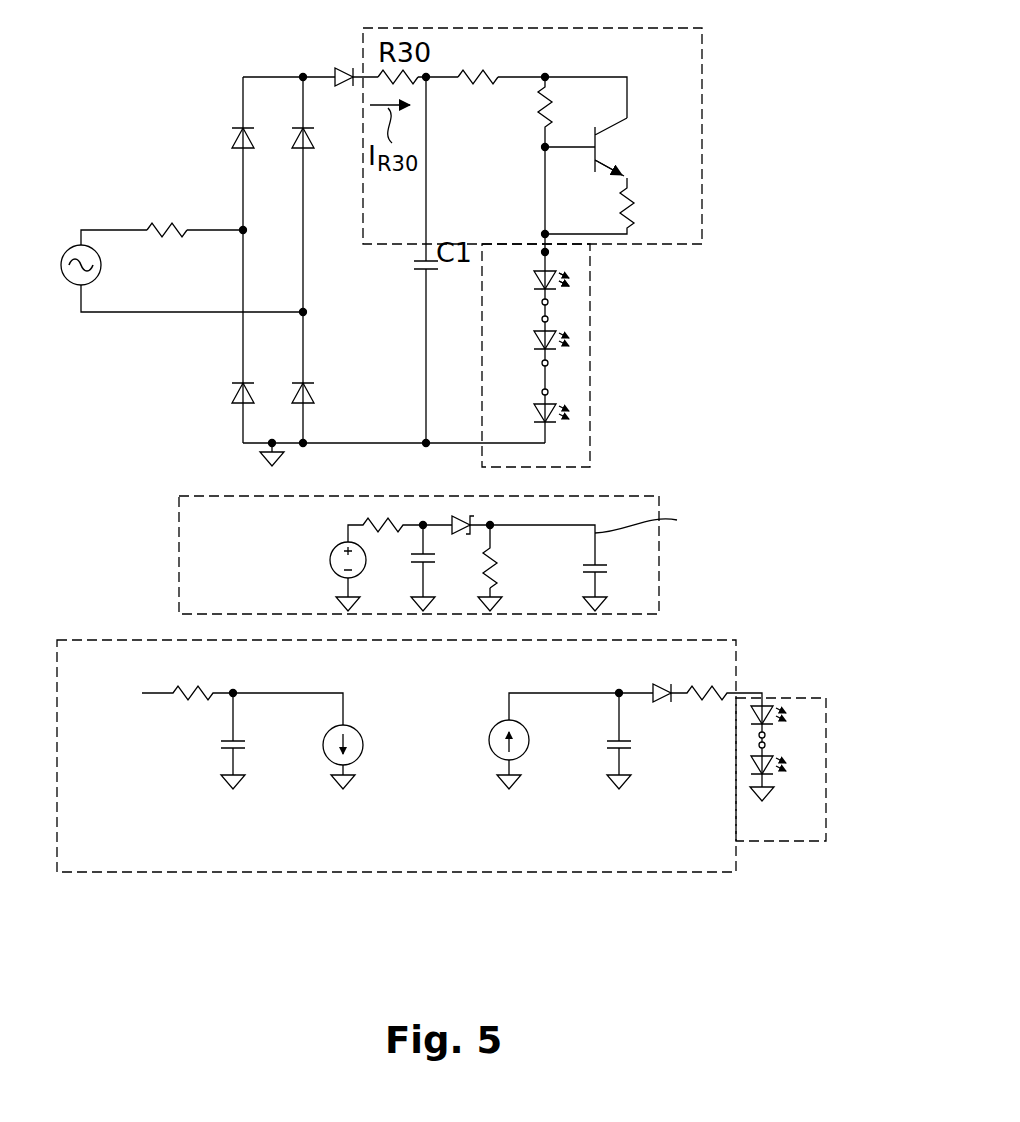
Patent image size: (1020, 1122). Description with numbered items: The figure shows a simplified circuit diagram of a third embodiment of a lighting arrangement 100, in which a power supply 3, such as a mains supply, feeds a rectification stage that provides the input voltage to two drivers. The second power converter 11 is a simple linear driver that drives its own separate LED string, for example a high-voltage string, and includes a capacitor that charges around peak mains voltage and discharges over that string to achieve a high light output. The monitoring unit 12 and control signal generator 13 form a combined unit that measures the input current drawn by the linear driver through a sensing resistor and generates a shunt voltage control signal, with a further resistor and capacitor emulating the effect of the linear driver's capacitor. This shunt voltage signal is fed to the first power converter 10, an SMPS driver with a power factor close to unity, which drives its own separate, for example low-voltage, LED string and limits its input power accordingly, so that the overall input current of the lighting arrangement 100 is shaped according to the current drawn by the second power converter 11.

The power supply 3 is at (66, 248).
The second power converter 11 is at (703, 140).
The monitoring unit 12 is at (402, 555).
The control signal generator 13 is at (483, 559).
The first power converter 10 is at (658, 873).
The lighting arrangement 100 is at (737, 990).